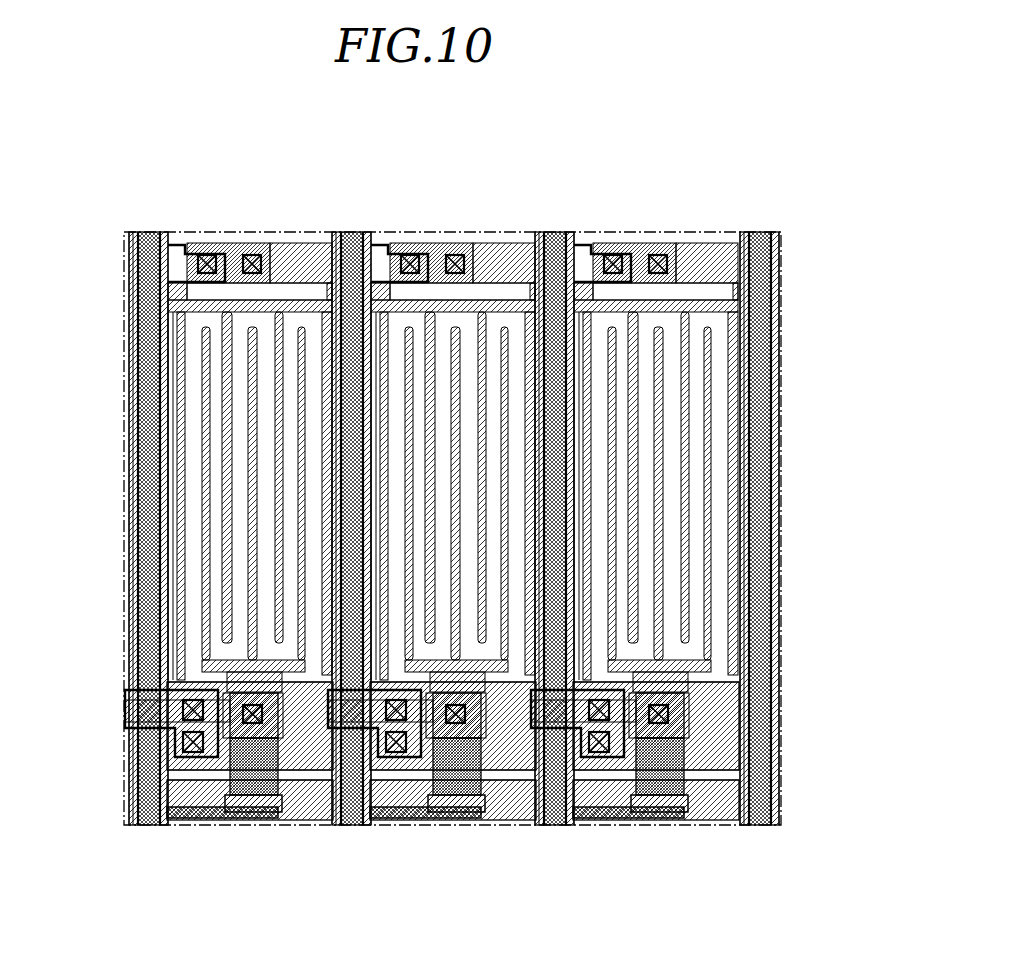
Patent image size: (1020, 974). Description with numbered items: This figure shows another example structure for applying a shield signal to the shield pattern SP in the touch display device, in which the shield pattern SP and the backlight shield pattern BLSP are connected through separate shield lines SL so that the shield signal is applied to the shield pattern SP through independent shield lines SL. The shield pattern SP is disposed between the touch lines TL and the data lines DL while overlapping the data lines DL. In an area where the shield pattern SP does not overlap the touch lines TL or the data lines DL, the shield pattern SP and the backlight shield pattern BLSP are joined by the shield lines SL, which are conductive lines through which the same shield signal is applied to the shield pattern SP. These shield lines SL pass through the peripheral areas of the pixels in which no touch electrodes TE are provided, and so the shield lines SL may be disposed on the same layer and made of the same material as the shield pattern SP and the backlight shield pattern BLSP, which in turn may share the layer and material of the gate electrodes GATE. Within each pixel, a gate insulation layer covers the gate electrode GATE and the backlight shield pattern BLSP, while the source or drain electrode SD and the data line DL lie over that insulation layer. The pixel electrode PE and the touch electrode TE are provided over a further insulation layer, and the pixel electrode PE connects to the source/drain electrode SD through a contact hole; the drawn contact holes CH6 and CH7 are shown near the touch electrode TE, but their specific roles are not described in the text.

The shield pattern SP is at (177, 246).
The sixth contact hole CH6 is at (204, 255).
The seventh contact hole CH7 is at (250, 255).
The touch electrode TE is at (322, 300).
The shield line SL is at (312, 252).
The backlight shield pattern BLSP is at (183, 408).
The data line DL is at (147, 505).
The touch line TL is at (135, 520).
The pixel electrode PE is at (150, 704).
The source or drain electrode SD is at (232, 765).
The gate electrode GATE is at (247, 803).